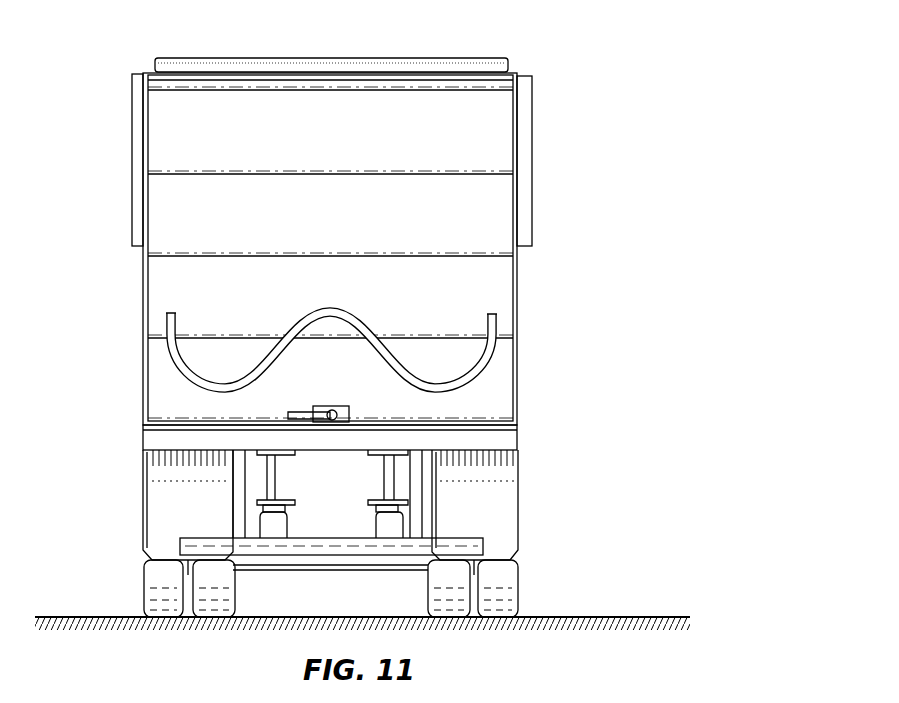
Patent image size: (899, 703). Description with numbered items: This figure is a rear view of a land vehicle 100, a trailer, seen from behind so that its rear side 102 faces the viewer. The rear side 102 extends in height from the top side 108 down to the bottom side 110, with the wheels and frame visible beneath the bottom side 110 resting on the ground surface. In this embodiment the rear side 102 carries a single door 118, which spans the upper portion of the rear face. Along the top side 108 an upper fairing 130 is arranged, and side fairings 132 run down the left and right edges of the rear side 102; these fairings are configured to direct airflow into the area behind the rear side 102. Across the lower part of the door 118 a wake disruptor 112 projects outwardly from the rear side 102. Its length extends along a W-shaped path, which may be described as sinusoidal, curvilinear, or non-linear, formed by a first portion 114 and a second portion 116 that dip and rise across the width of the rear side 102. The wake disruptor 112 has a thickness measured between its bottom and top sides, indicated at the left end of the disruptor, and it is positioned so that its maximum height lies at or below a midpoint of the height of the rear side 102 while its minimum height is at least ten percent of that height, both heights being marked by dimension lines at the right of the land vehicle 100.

The land vehicle 100 is at (603, 46).
The rear side 102 is at (512, 441).
The top side 108 is at (517, 73).
The bottom side 110 is at (497, 449).
The wake disruptor 112 is at (690, 451).
The first portion 114 is at (198, 372).
The second portion 116 is at (467, 376).
The door 118 is at (408, 100).
The upper fairing 130 is at (178, 60).
The side fairing 132 is at (138, 166).